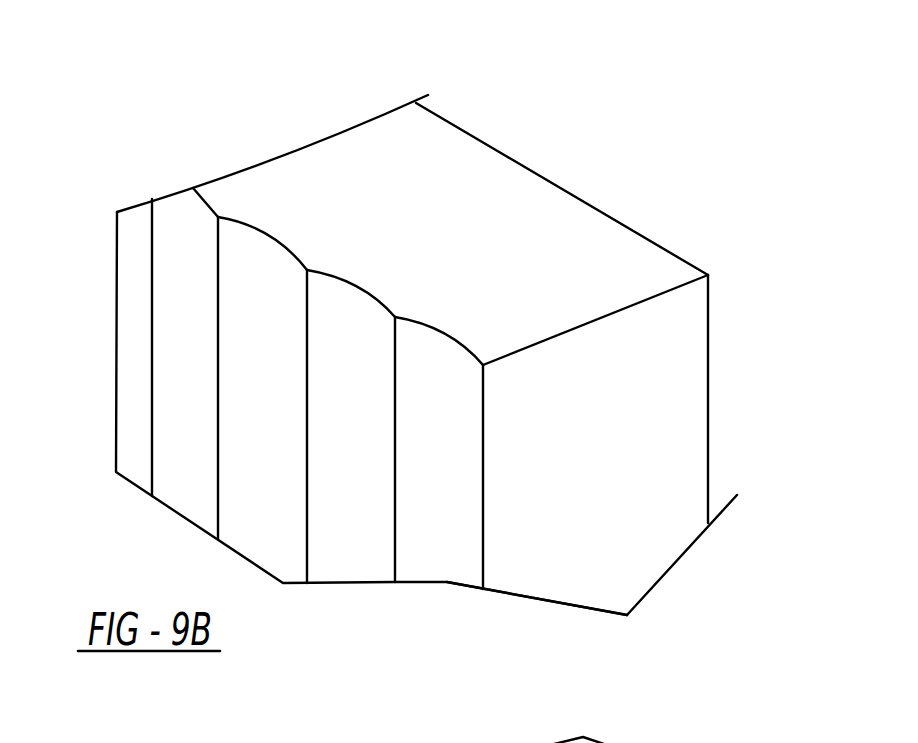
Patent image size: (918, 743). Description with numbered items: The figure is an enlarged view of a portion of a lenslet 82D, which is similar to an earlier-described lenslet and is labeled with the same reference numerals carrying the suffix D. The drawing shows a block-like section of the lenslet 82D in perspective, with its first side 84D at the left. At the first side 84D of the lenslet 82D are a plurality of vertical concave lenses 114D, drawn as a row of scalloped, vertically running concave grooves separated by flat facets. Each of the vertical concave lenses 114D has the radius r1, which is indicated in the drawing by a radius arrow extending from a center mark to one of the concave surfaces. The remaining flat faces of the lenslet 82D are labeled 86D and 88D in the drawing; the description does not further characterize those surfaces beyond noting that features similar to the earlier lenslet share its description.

The lenslet 82D is at (297, 173).
The vertical concave lenses 114D is at (180, 280).
The first side 84D is at (135, 430).
The second side surface 86D is at (708, 392).
The end surface 88D is at (628, 528).
The radius r1 is at (323, 329).